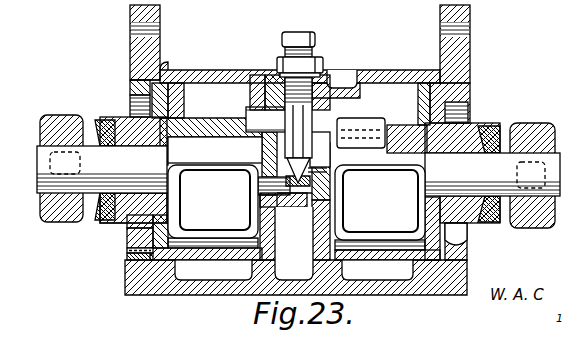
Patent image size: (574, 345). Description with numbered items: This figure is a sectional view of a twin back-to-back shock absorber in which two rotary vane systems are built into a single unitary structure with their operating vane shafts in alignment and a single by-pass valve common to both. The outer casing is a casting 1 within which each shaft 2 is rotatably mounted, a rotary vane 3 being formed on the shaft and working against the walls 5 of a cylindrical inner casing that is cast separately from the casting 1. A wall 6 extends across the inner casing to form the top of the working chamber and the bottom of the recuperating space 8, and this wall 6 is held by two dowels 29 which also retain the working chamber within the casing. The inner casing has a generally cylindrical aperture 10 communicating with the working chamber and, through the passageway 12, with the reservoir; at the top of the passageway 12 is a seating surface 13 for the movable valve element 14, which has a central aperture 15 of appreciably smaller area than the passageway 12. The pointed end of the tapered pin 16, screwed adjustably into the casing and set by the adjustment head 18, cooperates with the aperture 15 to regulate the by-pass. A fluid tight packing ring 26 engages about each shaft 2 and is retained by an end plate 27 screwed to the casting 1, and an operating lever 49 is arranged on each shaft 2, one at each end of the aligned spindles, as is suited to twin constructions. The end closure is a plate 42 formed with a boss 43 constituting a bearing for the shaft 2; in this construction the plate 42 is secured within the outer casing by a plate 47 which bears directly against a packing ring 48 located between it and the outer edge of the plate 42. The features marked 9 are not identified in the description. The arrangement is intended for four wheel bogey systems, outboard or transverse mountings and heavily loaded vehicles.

The casting constituting the outer casing 1 is at (207, 82).
The shaft 2 is at (88, 130).
The rotary vane 3 is at (130, 249).
The walls of the cylindrical inner casing 5 is at (160, 231).
The wall 6 is at (295, 171).
The recuperating space 8 is at (186, 82).
The recess in housing base 9 is at (213, 280).
The aperture 10 is at (256, 185).
The passageway 12 is at (294, 243).
The seating surface 13 is at (380, 202).
The movable valve element 14 is at (297, 196).
The central aperture 15 is at (380, 201).
The tapered pin 16 is at (290, 112).
The adjustment head 18 is at (306, 35).
The fluid tight packing ring 26 is at (106, 140).
The end plate 27 is at (100, 120).
The dowels 29 is at (248, 116).
The end plate 42 is at (163, 126).
The boss 43 is at (128, 226).
The plate 47 is at (166, 72).
The packing ring 48 is at (128, 262).
The lever 49 is at (62, 115).